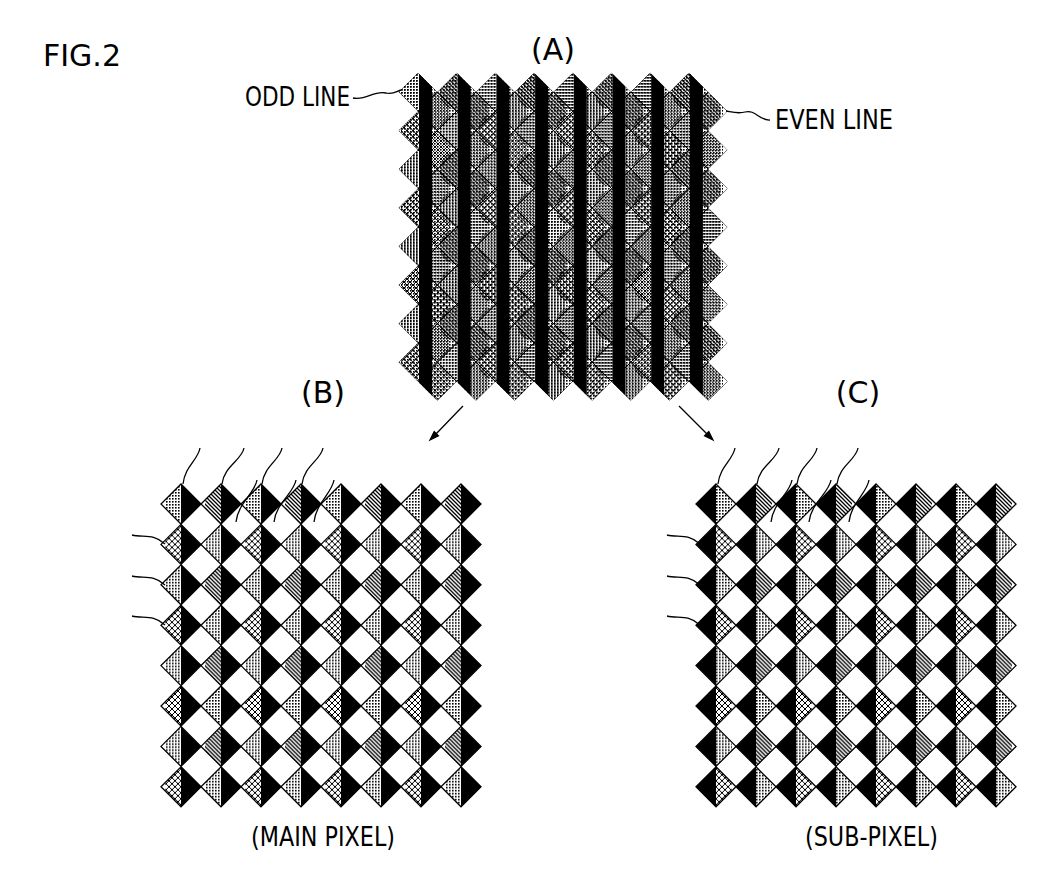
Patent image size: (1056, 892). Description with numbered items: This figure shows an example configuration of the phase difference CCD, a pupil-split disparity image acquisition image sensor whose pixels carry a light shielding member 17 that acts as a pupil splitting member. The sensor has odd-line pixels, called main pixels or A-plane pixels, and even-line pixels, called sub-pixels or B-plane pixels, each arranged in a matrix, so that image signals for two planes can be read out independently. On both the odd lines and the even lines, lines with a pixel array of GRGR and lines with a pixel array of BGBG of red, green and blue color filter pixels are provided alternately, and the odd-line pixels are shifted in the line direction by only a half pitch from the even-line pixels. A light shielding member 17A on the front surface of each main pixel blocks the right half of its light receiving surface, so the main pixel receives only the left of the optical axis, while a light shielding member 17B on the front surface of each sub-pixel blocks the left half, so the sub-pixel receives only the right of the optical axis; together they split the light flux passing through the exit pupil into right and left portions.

The light shielding member 17 is at (722, 71).
The light shielding member 17A is at (157, 490).
The light shielding member 17B is at (692, 490).